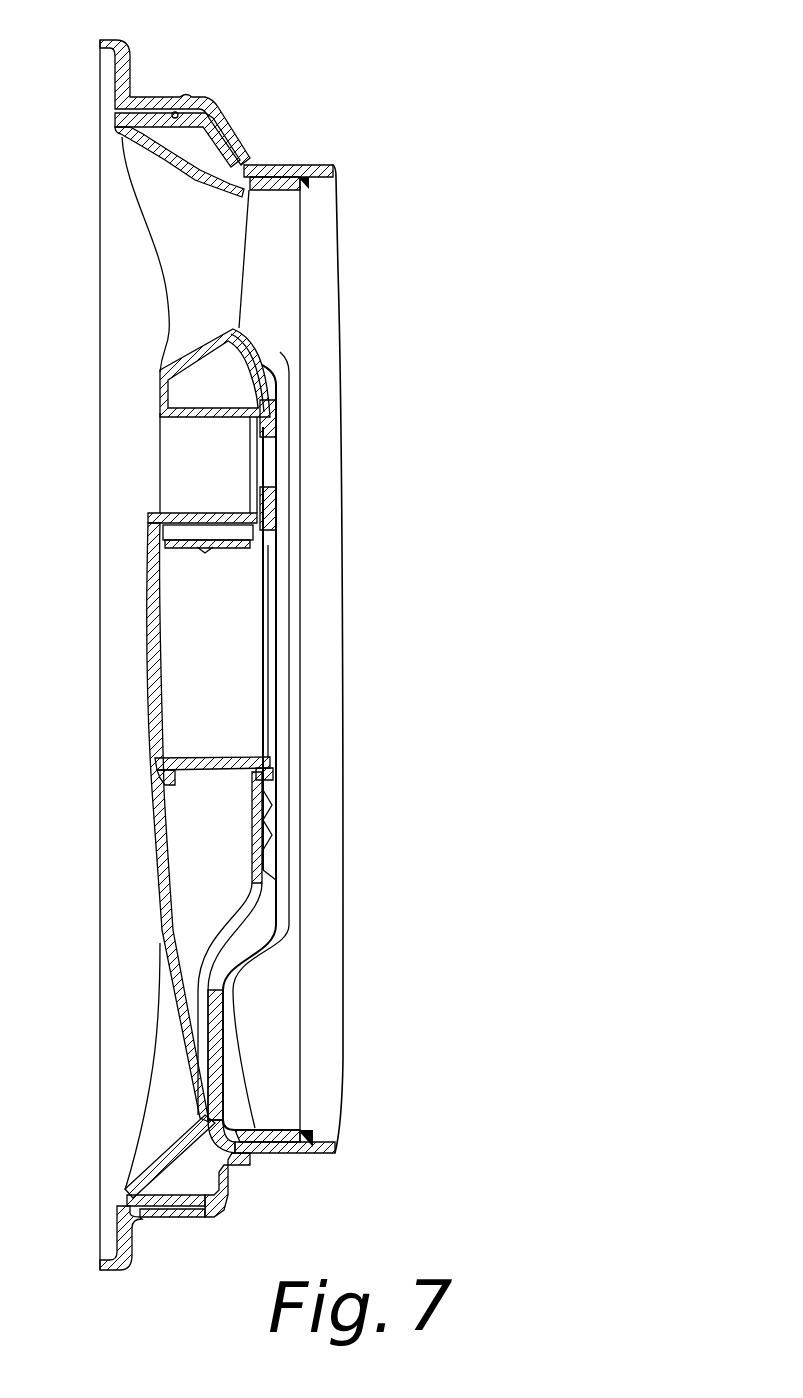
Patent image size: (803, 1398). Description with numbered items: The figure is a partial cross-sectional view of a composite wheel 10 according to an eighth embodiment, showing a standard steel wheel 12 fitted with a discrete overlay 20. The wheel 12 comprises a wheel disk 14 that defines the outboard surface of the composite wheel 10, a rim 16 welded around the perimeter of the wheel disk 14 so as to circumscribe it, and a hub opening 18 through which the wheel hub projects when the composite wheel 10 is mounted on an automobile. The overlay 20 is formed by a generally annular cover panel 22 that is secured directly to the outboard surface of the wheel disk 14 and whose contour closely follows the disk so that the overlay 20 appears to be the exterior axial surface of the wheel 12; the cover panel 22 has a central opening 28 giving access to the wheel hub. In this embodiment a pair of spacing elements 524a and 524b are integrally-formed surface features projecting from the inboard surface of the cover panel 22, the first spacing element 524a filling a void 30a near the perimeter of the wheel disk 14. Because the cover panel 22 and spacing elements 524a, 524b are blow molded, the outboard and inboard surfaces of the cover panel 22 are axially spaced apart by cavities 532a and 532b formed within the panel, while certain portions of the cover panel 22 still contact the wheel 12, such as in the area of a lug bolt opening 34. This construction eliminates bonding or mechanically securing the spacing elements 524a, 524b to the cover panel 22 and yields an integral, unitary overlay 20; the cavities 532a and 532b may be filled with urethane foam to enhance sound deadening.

The composite wheel 10 is at (362, 245).
The wheel 12 is at (352, 768).
The wheel disk 14 is at (272, 918).
The rim 16 is at (130, 60).
The hub opening 18 is at (276, 557).
The overlay 20 is at (157, 884).
The cover panel 22 is at (160, 370).
The central opening 28 is at (240, 762).
The void 30a is at (177, 112).
The lug bolt opening 34 is at (252, 440).
The spacing element 524a is at (233, 133).
The spacing element 524b is at (272, 403).
The cavity 532a is at (213, 173).
The cavity 532b is at (228, 388).